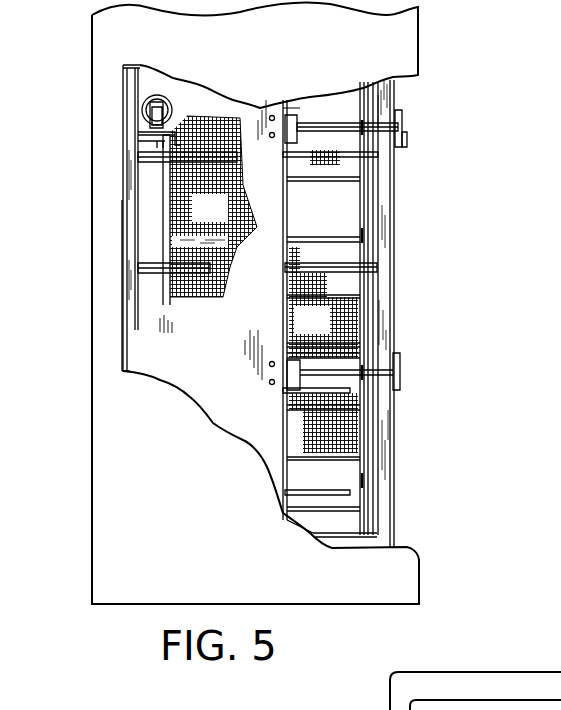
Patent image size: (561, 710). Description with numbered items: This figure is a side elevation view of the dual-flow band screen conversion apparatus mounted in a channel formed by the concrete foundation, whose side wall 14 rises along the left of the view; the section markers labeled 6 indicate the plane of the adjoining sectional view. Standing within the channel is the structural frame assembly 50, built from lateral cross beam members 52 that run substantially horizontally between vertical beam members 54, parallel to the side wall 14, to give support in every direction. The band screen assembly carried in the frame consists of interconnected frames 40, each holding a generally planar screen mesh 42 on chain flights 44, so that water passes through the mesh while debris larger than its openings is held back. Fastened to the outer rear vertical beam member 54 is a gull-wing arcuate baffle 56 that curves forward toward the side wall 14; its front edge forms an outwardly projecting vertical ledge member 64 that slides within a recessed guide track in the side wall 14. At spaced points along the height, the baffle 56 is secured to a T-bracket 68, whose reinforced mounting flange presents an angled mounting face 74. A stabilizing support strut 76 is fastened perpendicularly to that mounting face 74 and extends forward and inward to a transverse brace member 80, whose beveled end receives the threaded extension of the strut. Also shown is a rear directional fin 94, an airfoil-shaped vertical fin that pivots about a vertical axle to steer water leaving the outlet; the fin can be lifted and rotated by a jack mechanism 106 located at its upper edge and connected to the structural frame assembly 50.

The side walls 14 is at (180, 492).
The interconnected frames 40 is at (338, 235).
The screen mesh 42 is at (225, 220).
The chain flights 44 is at (377, 244).
The structural frame assembly 50 is at (398, 312).
The lateral cross beam members 52 is at (140, 160).
The vertical beam members 54 is at (130, 297).
The arcuate baffles 56 is at (235, 383).
The projecting ledge member 64 is at (286, 112).
The T-bracket 68 is at (290, 116).
The mounting face 74 is at (303, 119).
The stabilizing support strut 76 is at (400, 112).
The transverse brace member 80 is at (403, 134).
The rear directional fin 94 is at (142, 212).
The jack mechanism 106 is at (145, 93).
The section line 6- 6 is at (75, 343).